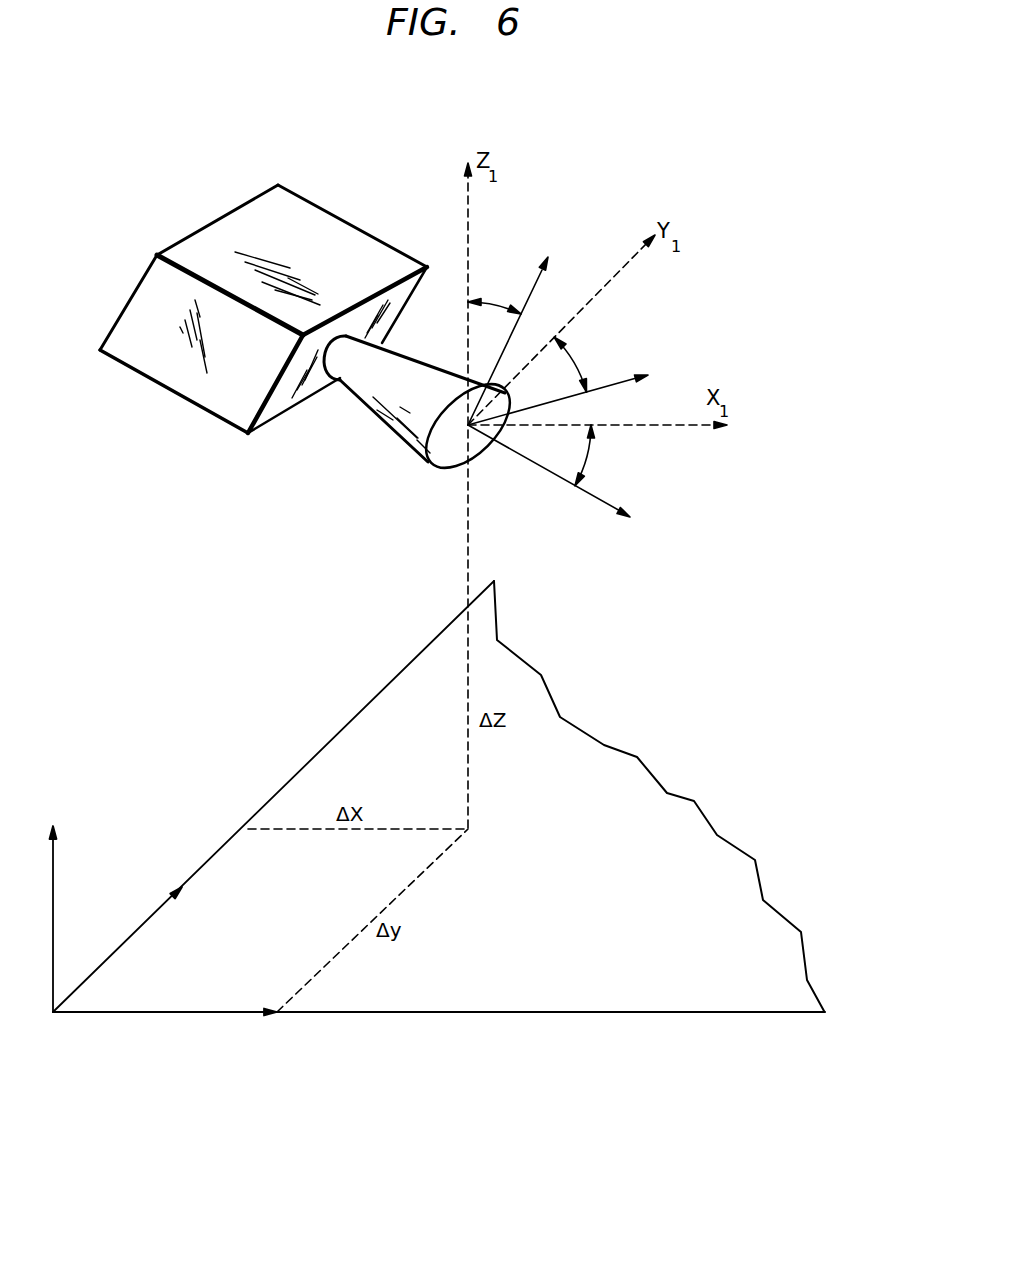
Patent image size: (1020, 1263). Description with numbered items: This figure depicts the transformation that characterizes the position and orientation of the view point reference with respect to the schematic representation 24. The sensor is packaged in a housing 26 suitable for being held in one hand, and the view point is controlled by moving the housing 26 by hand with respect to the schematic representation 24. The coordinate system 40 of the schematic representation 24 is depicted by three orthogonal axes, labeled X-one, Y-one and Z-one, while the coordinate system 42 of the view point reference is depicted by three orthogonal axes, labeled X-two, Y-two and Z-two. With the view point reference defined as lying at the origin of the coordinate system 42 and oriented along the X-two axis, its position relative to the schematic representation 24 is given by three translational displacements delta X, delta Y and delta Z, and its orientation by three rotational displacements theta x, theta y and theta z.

The housing 26 is at (227, 218).
The coordinate system of the view point reference 42 is at (588, 492).
The coordinate system of the schematic representation 40 is at (153, 1012).
The schematic representation 24 is at (623, 1011).